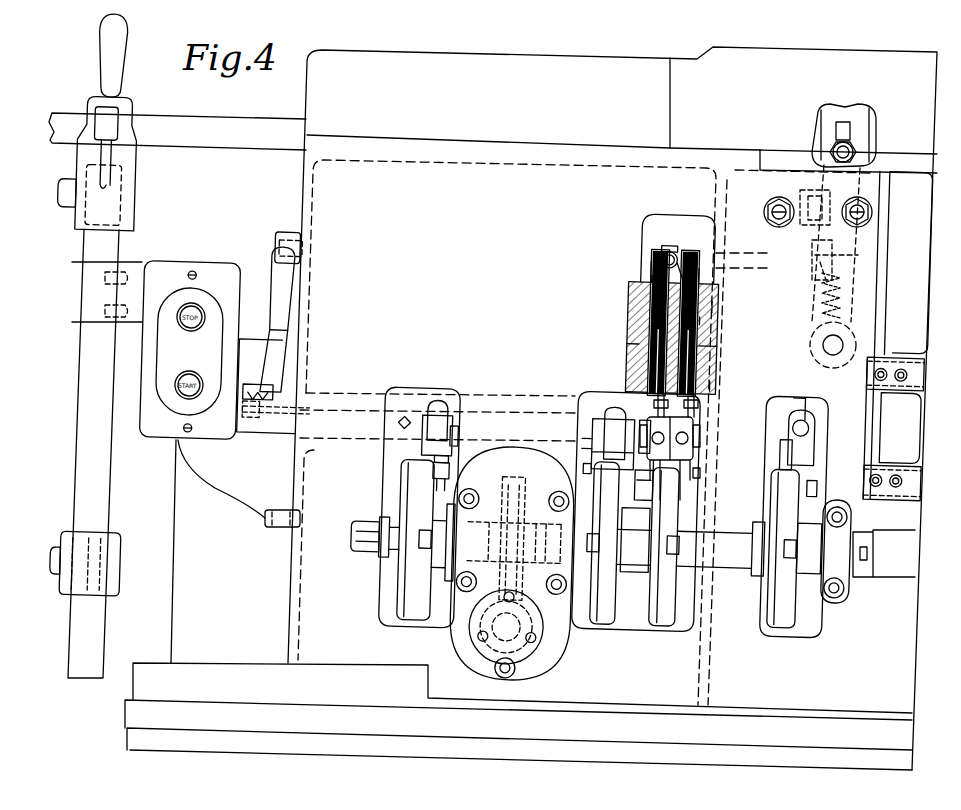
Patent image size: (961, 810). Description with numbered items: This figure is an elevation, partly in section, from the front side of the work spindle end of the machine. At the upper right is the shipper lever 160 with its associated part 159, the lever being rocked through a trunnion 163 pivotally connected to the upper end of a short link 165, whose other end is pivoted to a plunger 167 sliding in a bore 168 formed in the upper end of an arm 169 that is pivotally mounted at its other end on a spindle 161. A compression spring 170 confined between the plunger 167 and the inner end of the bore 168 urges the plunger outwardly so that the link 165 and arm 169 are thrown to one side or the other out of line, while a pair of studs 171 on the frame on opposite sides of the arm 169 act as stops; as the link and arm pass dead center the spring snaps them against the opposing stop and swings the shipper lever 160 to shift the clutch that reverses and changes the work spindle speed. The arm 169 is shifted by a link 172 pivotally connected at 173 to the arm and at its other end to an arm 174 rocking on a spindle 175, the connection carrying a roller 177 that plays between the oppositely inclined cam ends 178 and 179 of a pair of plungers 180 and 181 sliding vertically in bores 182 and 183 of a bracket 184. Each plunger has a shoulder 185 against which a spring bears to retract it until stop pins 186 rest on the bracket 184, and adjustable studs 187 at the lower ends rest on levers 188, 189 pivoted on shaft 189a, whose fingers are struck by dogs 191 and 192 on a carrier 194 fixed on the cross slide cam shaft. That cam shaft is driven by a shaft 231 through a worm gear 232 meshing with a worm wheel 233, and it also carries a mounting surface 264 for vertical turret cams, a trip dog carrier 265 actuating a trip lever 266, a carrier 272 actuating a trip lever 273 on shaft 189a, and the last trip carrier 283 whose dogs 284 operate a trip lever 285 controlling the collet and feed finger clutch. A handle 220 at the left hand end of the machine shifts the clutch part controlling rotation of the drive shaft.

The knob 159 is at (858, 110).
The trunnion 163 is at (856, 152).
The short link 165 is at (833, 152).
The plunger 167 is at (843, 196).
The studs 171 is at (768, 212).
The shipper lever 160 is at (860, 245).
The arm 169 is at (858, 256).
The bore 168 is at (845, 300).
The spindle 161 is at (828, 346).
The compression spring 170 is at (702, 346).
The pivotal connection 173 is at (820, 258).
The link 172 is at (722, 254).
The arm 174 is at (669, 251).
The roller 177 is at (656, 254).
The cam end 178 is at (678, 262).
The cam end 179 is at (650, 262).
The plunger 181 is at (651, 276).
The stop pins 186 is at (700, 272).
The plunger 180 is at (712, 306).
The bore 182 is at (702, 320).
The spindle 175 is at (692, 333).
The shoulder 185 is at (697, 360).
The bracket 184 is at (716, 382).
The bore 183 is at (640, 320).
The lever 189 is at (652, 420).
The adjustable studs 187 is at (696, 427).
The lever 188 is at (698, 440).
The dog 191 is at (690, 466).
The dog 192 is at (670, 480).
The trip lever 273 is at (606, 436).
The trip lever 285 is at (436, 415).
The shaft 189a is at (510, 412).
The dogs 284 is at (440, 468).
The worm wheel 233 is at (516, 484).
The trip carrier 283 is at (415, 580).
The shaft 231 is at (478, 632).
The worm gear 232 is at (500, 650).
The trip dog carrier 272 is at (606, 620).
The carrier 194 is at (667, 620).
The trip dog carrier 265 is at (782, 620).
The trip lever 266 is at (803, 456).
The mounting surface 264 is at (900, 535).
The handle 220 is at (282, 283).